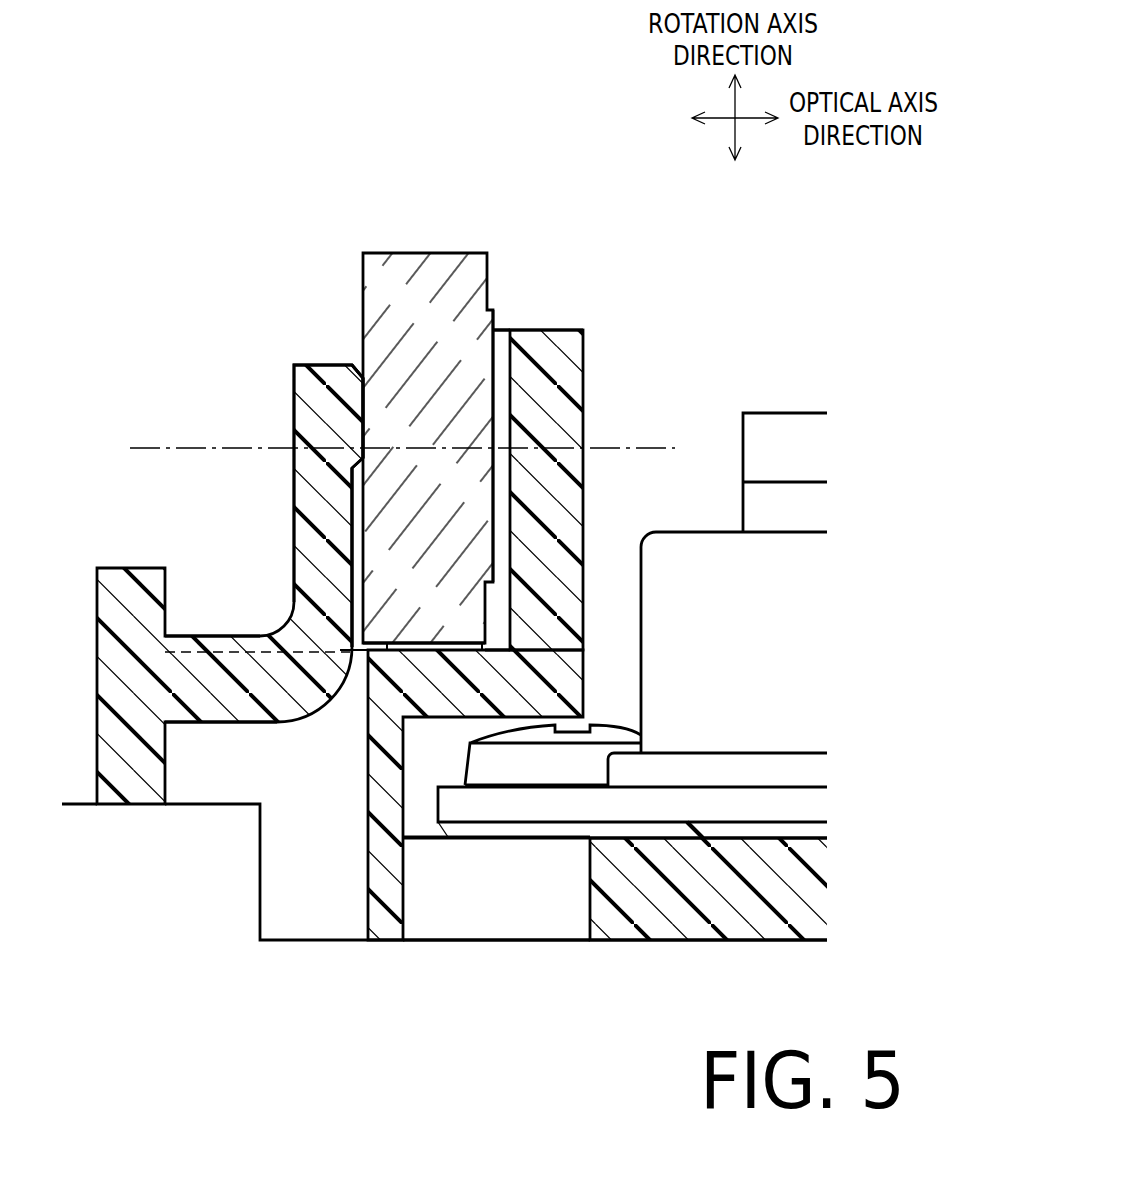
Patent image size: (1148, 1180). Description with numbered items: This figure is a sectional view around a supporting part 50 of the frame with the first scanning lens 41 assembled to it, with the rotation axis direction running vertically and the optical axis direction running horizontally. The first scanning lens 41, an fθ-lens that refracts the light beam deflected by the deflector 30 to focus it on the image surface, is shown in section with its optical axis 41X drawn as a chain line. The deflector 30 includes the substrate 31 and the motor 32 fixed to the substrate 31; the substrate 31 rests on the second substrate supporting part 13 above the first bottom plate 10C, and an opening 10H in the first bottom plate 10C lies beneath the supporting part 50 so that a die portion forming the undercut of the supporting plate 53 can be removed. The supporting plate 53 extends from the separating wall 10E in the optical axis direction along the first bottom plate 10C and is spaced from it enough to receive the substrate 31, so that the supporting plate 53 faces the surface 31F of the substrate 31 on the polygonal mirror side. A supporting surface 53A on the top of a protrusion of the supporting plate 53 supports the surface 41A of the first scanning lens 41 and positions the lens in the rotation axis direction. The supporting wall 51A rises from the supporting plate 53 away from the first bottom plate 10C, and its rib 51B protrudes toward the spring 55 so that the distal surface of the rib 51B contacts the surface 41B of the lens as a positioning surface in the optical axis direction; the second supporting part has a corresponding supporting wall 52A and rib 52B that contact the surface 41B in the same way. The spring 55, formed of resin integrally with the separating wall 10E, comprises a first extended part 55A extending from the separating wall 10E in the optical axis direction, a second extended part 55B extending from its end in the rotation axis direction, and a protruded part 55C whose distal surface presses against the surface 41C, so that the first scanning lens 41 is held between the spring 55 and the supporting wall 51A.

The separating wall 10E is at (122, 580).
The opening 10H is at (478, 920).
The first bottom plate 10C is at (740, 930).
The second substrate supporting part 13 is at (627, 832).
The deflector 30 is at (771, 367).
The substrate 31 is at (570, 805).
The surface of the substrate 31F is at (540, 778).
The motor 32 is at (692, 519).
The first scanning lens 41 is at (425, 278).
The surface of the first scanning lens 41A is at (413, 646).
The surface of the first scanning lens 41B is at (494, 372).
The surface of the first scanning lens 41C is at (362, 405).
The optical axis 41X is at (155, 446).
The supporting part 50 is at (625, 228).
The supporting wall 51A is at (573, 388).
The rib 51B is at (494, 340).
The supporting wall 52A is at (617, 490).
The rib 52B is at (564, 464).
The supporting plate 53 is at (462, 690).
The supporting surface 53A is at (450, 642).
The spring 55 is at (305, 366).
The first extended part 55A is at (232, 665).
The second extended part 55B is at (316, 516).
The protruded part 55C is at (366, 386).